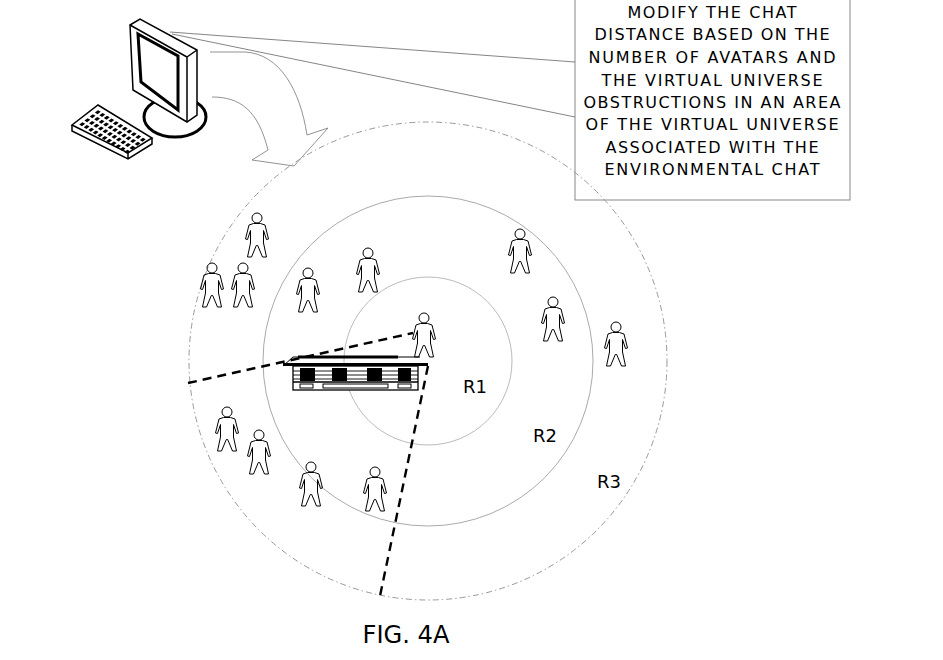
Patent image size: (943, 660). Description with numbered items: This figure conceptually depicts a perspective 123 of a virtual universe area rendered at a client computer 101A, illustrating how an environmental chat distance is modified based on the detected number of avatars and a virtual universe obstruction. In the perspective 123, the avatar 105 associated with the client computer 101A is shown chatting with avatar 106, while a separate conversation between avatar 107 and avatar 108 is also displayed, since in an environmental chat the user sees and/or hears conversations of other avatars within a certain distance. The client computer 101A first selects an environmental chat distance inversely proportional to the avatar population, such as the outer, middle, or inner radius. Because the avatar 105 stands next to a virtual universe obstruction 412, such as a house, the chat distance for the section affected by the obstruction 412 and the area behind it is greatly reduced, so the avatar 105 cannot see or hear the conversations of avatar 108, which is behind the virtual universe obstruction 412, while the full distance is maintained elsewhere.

The client computer 101A is at (128, 58).
The perspective 123 is at (368, 128).
The avatar 105 is at (438, 333).
The avatar 106 is at (508, 262).
The avatar 107 is at (630, 350).
The avatar 108 is at (300, 496).
The virtual universe obstruction 412 is at (290, 386).